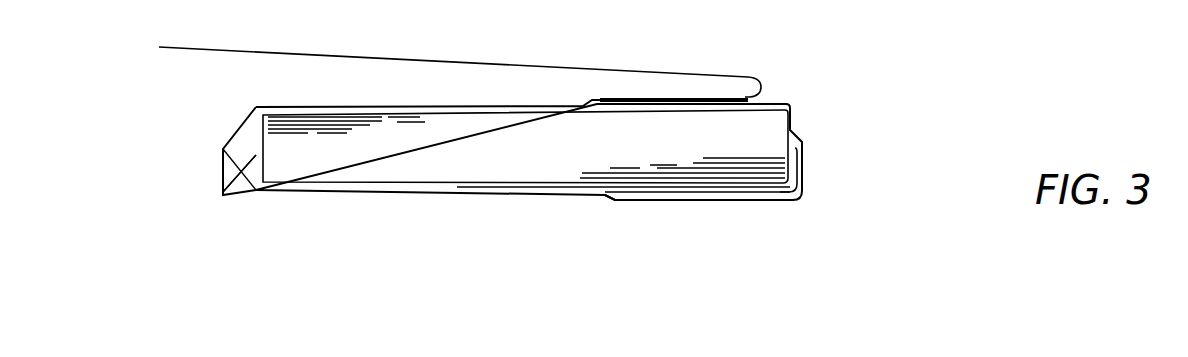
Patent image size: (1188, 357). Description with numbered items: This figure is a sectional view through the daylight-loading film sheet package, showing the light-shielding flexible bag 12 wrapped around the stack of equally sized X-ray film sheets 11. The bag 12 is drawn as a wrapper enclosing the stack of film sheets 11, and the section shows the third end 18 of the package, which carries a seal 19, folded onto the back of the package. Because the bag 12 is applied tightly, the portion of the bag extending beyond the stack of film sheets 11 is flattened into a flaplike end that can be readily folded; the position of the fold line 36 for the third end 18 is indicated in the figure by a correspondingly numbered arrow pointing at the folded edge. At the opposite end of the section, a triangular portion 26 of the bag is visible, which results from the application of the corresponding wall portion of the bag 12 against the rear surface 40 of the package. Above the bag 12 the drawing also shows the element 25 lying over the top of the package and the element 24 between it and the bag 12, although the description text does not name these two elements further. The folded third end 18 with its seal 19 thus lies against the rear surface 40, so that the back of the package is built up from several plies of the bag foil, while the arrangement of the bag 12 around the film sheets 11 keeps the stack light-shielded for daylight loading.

The X-ray film sheets 11 is at (518, 167).
The light-shielding flexible bag 12 is at (408, 191).
The third end 18 is at (705, 200).
The seal 19 is at (597, 197).
The adhesive strip 24 is at (668, 97).
The cover sheet 25 is at (444, 61).
The triangular portion 26 is at (238, 134).
The fold line 36 is at (822, 146).
The rear surface 40 is at (255, 158).